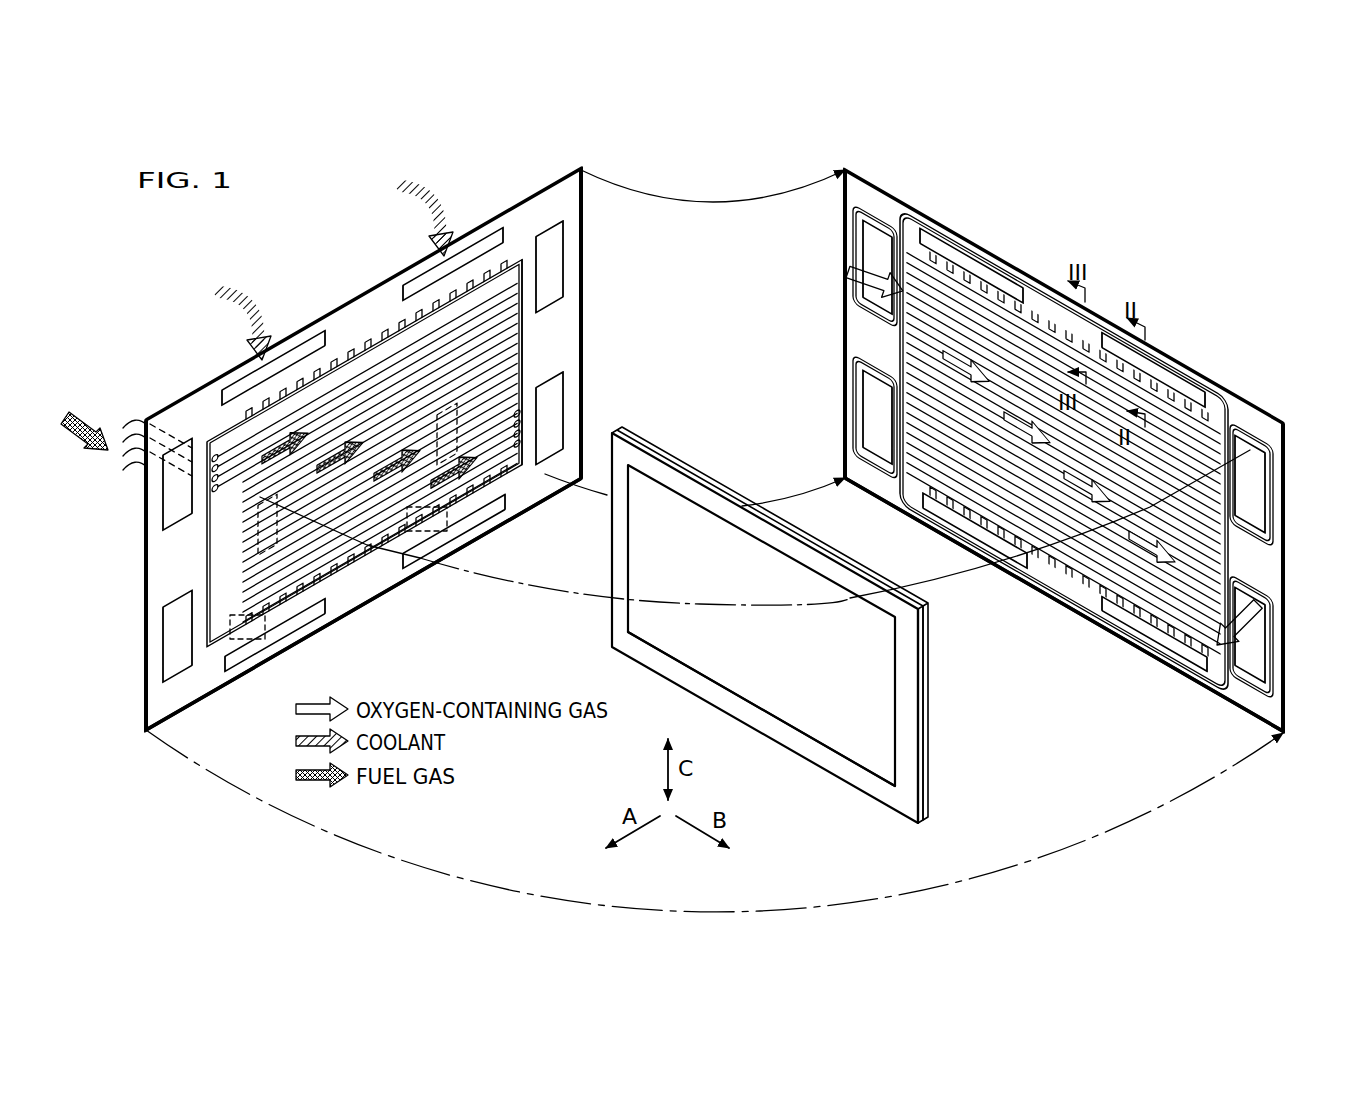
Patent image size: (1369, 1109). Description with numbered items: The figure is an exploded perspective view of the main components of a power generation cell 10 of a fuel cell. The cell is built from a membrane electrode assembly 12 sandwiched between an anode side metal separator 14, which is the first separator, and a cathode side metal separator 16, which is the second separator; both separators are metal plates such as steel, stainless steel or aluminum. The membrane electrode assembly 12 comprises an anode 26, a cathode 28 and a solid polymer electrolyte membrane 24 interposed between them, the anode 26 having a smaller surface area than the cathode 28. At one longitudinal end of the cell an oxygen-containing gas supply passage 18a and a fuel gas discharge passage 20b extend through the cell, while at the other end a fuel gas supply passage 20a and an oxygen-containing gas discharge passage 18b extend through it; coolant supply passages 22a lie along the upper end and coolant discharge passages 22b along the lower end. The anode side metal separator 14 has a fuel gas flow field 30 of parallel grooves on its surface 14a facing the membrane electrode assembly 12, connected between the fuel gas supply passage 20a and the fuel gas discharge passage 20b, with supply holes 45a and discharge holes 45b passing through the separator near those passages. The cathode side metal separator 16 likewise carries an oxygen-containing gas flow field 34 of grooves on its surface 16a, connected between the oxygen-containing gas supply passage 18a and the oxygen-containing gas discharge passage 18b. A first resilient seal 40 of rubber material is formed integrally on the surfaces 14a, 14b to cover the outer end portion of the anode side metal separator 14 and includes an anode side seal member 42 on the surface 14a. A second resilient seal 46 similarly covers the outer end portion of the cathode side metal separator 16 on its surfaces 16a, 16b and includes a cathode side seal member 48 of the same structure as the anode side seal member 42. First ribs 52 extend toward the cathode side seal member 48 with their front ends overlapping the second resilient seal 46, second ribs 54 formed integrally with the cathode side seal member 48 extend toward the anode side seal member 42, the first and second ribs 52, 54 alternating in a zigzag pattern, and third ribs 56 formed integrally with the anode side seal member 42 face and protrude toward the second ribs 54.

The power generation cell 10 is at (252, 238).
The membrane electrode assembly 12 is at (701, 469).
The anode side metal separator 14 is at (583, 170).
The surface of anode side metal separator 14a is at (352, 603).
The surface of anode side metal separator 14b is at (392, 598).
The cathode side metal separator 16 is at (843, 169).
The surface of cathode side metal separator 16a is at (1237, 692).
The surface of cathode side metal separator 16b is at (1212, 674).
The oxygen-containing gas supply passage 18a is at (556, 262).
The oxygen-containing gas discharge passage 18b is at (170, 641).
The fuel gas supply passage 20a is at (170, 515).
The fuel gas discharge passage 20b is at (552, 420).
The coolant supply passages 22a is at (292, 350).
The coolant discharge passages 22b is at (268, 640).
The solid polymer electrolyte membrane 24 is at (898, 800).
The anode 26 is at (818, 726).
The cathode 28 is at (935, 676).
The fuel gas flow field 30 is at (268, 436).
The oxygen-containing gas flow field 34 is at (1158, 438).
The first resilient seal 40 is at (205, 692).
The anode side seal member 42 is at (520, 258).
The supply holes 45a is at (213, 492).
The discharge holes 45b is at (518, 410).
The second resilient seal 46 is at (1238, 718).
The cathode side seal member 48 is at (1210, 407).
The first ribs 52 is at (334, 340).
The second ribs 54 is at (963, 277).
The third ribs 56 is at (372, 332).